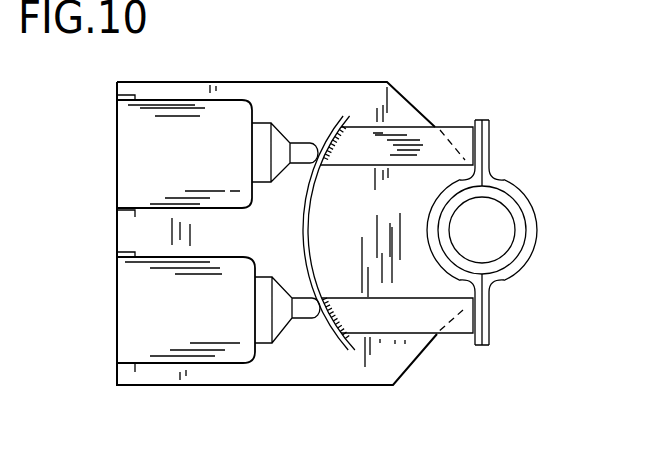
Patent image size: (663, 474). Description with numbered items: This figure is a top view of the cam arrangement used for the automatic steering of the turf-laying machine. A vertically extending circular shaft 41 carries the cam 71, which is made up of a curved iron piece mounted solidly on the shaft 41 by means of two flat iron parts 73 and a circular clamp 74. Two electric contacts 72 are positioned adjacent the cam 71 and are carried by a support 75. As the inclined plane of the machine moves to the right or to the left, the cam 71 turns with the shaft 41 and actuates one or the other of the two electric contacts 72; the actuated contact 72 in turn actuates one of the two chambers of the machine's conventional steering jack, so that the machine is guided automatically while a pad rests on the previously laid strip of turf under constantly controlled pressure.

The ring member 41 is at (497, 192).
The curved rack band 71 is at (306, 226).
The cylinder with nozzle 72 is at (277, 141).
The arm 73 is at (447, 143).
The connecting rod 74 is at (508, 268).
The housing 75 is at (128, 234).